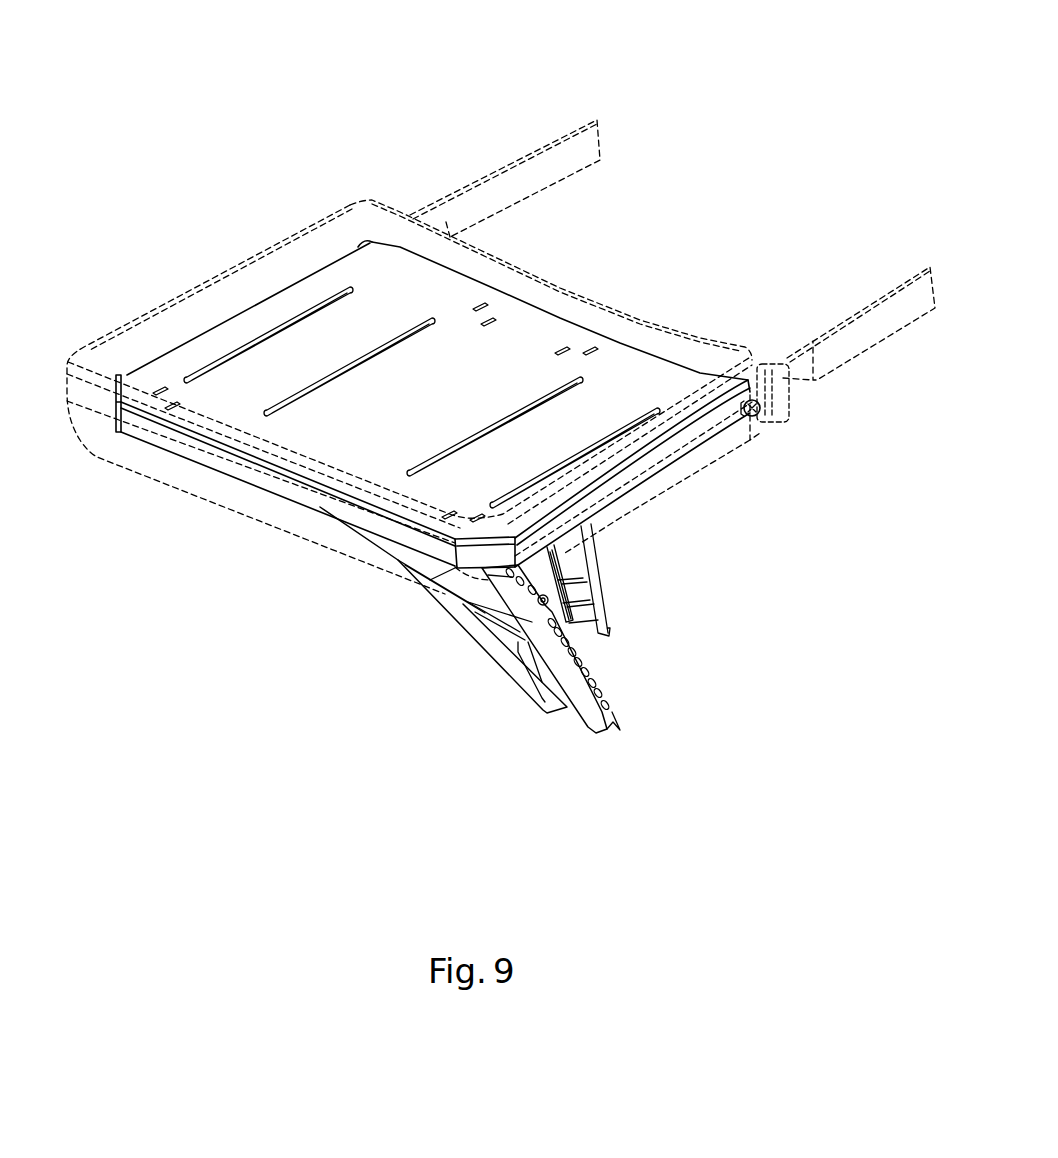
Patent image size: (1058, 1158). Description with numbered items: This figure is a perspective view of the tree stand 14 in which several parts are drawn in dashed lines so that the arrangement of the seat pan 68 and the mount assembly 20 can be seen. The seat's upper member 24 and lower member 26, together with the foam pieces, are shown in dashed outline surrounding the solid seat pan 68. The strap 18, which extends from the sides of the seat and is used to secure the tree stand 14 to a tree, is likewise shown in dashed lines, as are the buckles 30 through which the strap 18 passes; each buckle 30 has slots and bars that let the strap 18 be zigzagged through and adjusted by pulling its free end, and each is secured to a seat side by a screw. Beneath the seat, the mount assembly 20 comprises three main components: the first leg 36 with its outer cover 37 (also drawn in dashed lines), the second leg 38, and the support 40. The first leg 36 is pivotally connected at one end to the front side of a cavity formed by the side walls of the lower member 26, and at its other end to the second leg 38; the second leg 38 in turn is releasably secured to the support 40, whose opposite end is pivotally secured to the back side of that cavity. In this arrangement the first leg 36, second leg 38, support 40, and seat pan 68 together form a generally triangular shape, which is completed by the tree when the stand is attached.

The tree stand 14 is at (575, 89).
The strap 18 is at (876, 337).
The mount assembly 20 is at (248, 574).
The upper member 24 is at (170, 315).
The lower member 26 is at (141, 460).
The buckle 30 is at (766, 362).
The first leg 36 is at (547, 587).
The outer cover 37 is at (537, 624).
The second leg 38 is at (587, 682).
The support 40 is at (596, 556).
The seat pan 68 is at (378, 262).